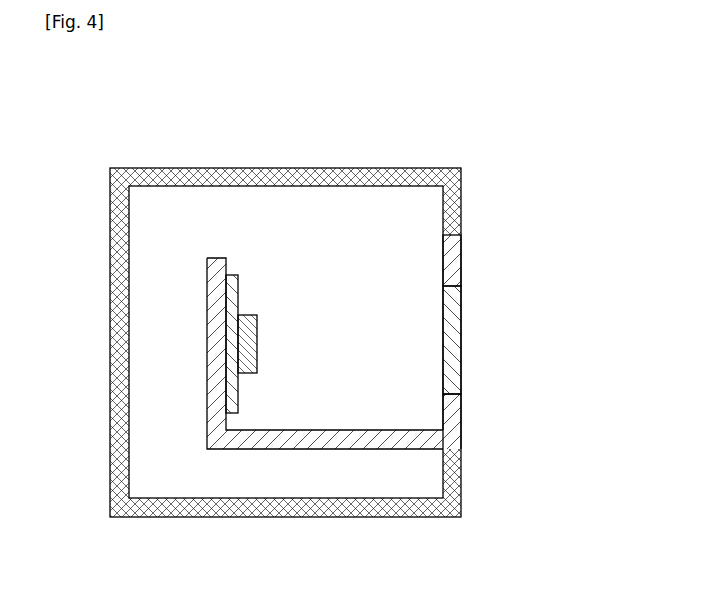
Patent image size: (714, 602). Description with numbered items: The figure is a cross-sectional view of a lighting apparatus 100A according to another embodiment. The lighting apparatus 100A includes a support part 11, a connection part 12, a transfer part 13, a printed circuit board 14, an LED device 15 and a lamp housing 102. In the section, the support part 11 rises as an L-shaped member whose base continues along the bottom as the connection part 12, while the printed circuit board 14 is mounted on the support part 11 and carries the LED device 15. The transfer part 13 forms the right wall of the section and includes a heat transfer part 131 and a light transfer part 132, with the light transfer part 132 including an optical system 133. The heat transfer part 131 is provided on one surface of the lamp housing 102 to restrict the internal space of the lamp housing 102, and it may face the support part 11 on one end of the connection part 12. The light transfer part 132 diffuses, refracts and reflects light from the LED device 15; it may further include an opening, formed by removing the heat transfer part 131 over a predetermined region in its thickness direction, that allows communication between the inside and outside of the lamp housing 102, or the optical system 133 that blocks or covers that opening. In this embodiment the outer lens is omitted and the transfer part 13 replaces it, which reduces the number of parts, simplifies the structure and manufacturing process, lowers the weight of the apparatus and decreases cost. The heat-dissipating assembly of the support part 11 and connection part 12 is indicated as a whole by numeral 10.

The lighting apparatus 100A is at (332, 308).
The lamp housing 102 is at (287, 180).
The heat dissipation module 10 is at (332, 399).
The support part 11 is at (249, 415).
The connection part 12 is at (352, 442).
The transfer part 13 is at (526, 351).
The heat transfer part 131 is at (465, 432).
The light transfer part 132 is at (455, 278).
The optical system 133 is at (457, 328).
The printed circuit board 14 is at (232, 343).
The LED device 15 is at (243, 328).